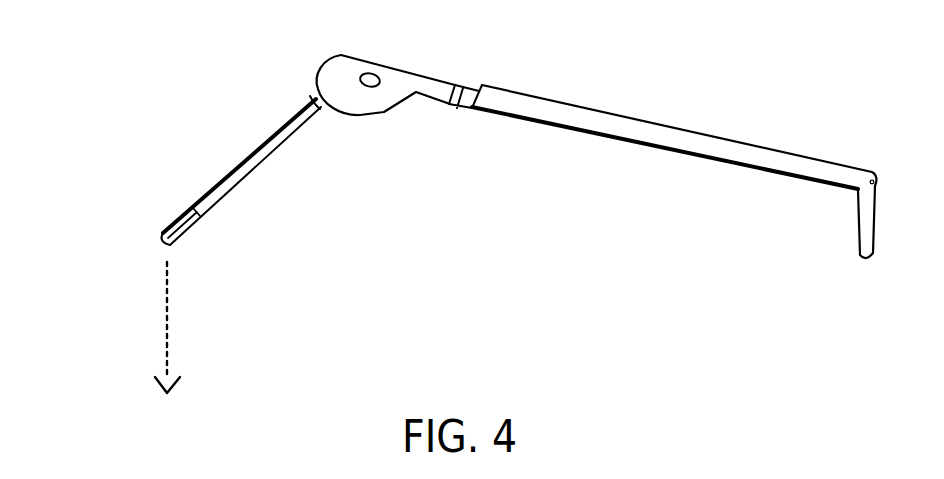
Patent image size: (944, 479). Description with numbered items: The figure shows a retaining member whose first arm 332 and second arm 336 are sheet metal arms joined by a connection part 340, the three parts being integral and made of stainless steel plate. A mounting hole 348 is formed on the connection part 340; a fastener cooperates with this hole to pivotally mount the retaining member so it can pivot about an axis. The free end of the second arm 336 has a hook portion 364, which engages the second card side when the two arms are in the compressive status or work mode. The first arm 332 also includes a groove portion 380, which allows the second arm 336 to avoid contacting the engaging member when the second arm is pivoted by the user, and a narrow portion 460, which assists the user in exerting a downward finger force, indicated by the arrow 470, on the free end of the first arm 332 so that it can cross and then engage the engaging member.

The first arm 332 is at (228, 185).
The second arm 336 is at (697, 147).
The connection part 340 is at (390, 104).
The mounting hole 348 is at (362, 76).
The hook portion 364 is at (863, 258).
The groove portion 380 is at (470, 110).
The narrow portion 460 is at (313, 117).
The arrow 470 is at (167, 318).